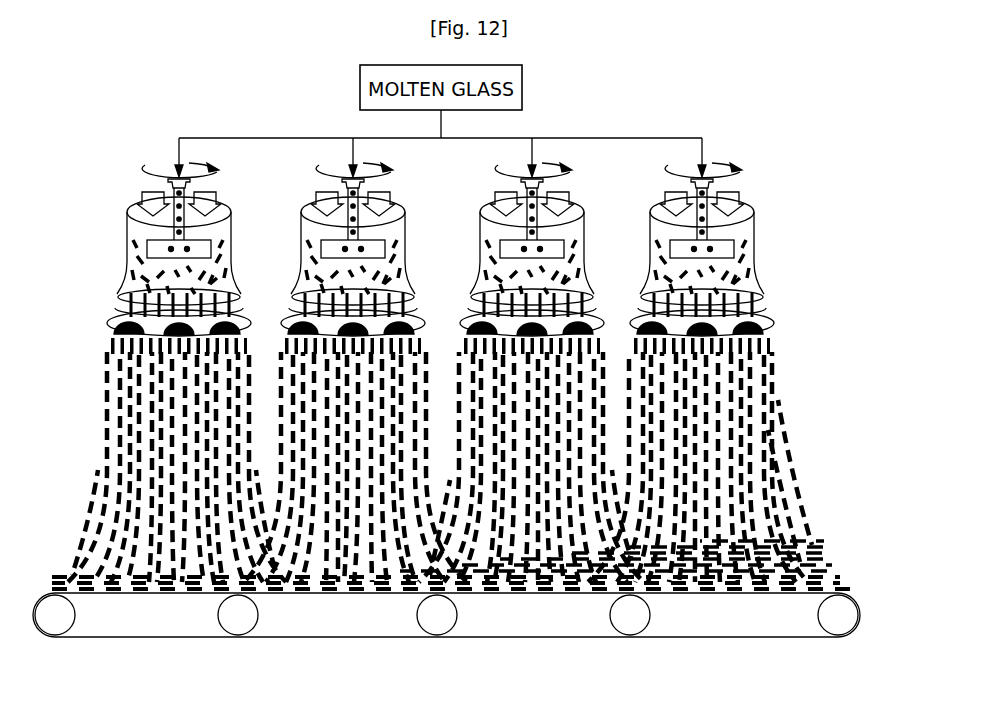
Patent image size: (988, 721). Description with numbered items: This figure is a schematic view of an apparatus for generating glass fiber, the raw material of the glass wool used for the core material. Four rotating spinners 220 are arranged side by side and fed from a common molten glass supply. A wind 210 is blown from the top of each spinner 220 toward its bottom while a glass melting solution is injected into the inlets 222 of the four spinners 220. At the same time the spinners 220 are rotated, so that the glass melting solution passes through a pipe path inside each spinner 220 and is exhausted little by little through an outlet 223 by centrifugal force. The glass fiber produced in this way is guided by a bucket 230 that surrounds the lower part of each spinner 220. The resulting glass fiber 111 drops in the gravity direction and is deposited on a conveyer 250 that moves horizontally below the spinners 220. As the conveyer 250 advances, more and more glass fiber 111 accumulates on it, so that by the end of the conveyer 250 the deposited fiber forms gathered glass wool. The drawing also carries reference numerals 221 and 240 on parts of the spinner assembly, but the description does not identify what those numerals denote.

The glass fiber 111 is at (778, 400).
The wind 210 is at (756, 219).
The spinner 220 is at (763, 214).
The rotation direction 221 is at (742, 149).
The inlet 222 is at (730, 140).
The outlet 223 is at (753, 240).
The bucket 230 is at (753, 254).
The spinner ring 240 is at (756, 311).
The conveyer 250 is at (348, 640).